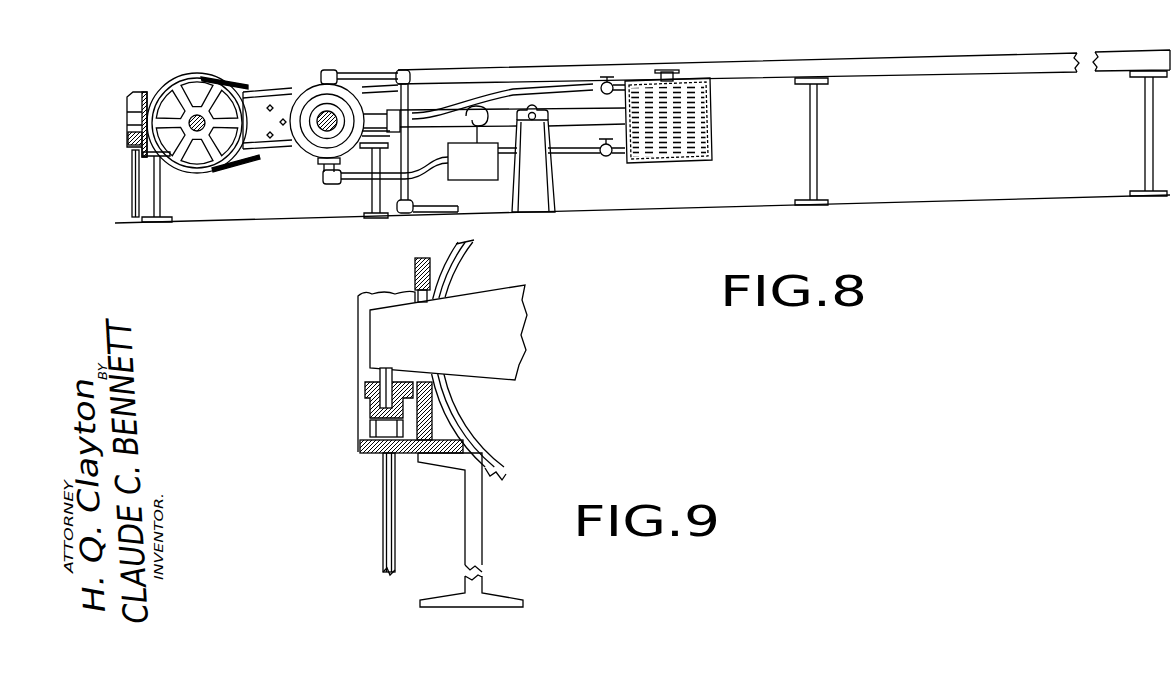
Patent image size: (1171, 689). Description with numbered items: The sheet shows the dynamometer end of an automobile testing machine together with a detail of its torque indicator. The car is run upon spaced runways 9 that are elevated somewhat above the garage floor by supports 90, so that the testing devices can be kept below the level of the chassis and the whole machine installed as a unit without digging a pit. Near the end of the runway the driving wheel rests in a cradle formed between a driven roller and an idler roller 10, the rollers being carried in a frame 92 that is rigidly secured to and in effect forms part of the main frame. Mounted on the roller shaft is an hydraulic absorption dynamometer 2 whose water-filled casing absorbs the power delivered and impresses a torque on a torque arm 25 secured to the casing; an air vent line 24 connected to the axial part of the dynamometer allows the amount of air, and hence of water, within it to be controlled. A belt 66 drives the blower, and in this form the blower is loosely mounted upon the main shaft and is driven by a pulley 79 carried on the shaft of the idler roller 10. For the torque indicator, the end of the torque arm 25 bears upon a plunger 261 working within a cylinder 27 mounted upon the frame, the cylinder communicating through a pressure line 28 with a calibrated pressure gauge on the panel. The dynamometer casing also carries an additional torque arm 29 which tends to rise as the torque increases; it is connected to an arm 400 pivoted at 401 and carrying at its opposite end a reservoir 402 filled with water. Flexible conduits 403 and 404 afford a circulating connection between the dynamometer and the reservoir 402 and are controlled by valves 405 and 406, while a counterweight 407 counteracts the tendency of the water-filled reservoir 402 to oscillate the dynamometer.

In FIG. 8, the hydraulic absorption dynamometer 2 is at (337, 92).
In FIG. 8, the runway 9 is at (770, 73).
In FIG. 9, the idler roller 10 is at (488, 433).
In FIG. 8, the air vent line 24 is at (371, 75).
In FIG. 8, the torque arm 25 is at (255, 112).
In FIG. 9, the torque arm 25 is at (503, 331).
In FIG. 8, the cylinder 27 is at (128, 145).
In FIG. 9, the cylinder 27 is at (375, 400).
In FIG. 8, the pressure line 28 is at (132, 187).
In FIG. 9, the pressure line 28 is at (387, 505).
In FIG. 8, the additional torque arm 29 is at (448, 118).
In FIG. 8, the belt 66 is at (227, 82).
In FIG. 8, the pulley 79 is at (215, 156).
In FIG. 8, the support 90 is at (158, 203).
In FIG. 9, the support 90 is at (474, 537).
In FIG. 8, the frame 92 is at (278, 143).
In FIG. 9, the frame 92 is at (413, 263).
In FIG. 9, the plunger 261 is at (380, 373).
In FIG. 8, the arm 400 is at (505, 116).
In FIG. 8, the pivot 401 is at (533, 113).
In FIG. 8, the reservoir 402 is at (678, 87).
In FIG. 8, the flexible conduit 403 is at (480, 96).
In FIG. 8, the flexible conduit 404 is at (572, 153).
In FIG. 8, the valve 405 is at (609, 86).
In FIG. 8, the valve 406 is at (606, 156).
In FIG. 8, the counterweight 407 is at (480, 168).